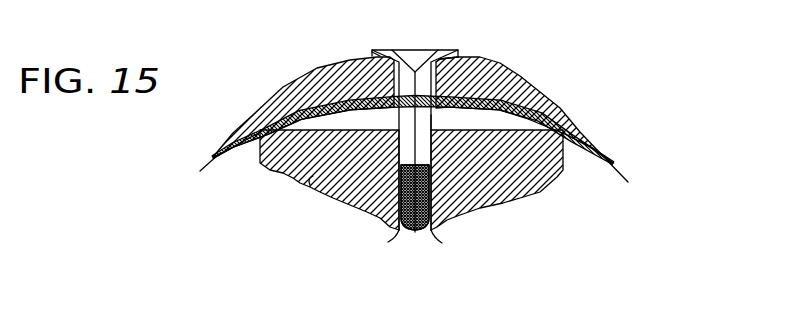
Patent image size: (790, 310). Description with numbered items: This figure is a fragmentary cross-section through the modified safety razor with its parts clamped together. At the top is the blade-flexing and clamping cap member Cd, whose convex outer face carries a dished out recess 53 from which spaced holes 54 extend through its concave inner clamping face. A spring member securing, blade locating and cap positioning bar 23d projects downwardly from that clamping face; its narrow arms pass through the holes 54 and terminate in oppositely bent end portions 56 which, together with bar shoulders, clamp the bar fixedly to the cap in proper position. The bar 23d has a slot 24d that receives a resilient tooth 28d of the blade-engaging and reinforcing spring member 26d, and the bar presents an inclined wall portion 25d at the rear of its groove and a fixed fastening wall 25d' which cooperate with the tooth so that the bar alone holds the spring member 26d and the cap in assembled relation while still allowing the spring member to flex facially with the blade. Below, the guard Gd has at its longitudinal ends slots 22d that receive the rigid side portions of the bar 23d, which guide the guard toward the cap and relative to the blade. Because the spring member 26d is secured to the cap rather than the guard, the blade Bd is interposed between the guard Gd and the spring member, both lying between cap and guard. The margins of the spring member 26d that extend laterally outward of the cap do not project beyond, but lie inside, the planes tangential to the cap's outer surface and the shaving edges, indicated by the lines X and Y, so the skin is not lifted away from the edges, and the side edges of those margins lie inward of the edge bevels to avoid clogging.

The blade-flexing and clamping cap member Cd is at (290, 84).
The resilient teeth 28d is at (432, 108).
The guard Gd is at (312, 187).
The inclined wall portions 25d is at (417, 177).
The dished out recesses 53 is at (415, 56).
The oppositely bent end portions 56 is at (377, 48).
The spaced holes 54 is at (428, 84).
The slots 24d is at (426, 124).
The blade-engaging and reinforcing spring member 26d is at (592, 138).
The fixed fastening walls 25d' is at (439, 192).
The slots 22d is at (396, 232).
The spring member securing, blade locating and cap positioning bars 23d is at (436, 233).
The blade Bd is at (225, 164).
The line tangential to cap surface and shaving edge X is at (213, 157).
The line tangential to cap surface and shaving edge Y is at (616, 165).